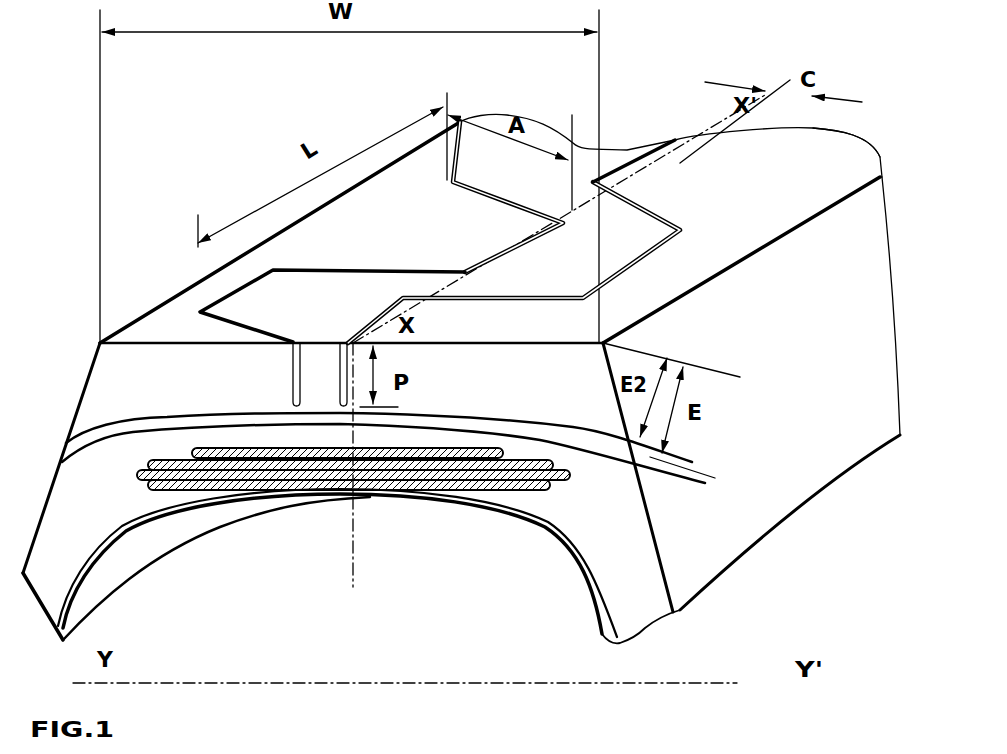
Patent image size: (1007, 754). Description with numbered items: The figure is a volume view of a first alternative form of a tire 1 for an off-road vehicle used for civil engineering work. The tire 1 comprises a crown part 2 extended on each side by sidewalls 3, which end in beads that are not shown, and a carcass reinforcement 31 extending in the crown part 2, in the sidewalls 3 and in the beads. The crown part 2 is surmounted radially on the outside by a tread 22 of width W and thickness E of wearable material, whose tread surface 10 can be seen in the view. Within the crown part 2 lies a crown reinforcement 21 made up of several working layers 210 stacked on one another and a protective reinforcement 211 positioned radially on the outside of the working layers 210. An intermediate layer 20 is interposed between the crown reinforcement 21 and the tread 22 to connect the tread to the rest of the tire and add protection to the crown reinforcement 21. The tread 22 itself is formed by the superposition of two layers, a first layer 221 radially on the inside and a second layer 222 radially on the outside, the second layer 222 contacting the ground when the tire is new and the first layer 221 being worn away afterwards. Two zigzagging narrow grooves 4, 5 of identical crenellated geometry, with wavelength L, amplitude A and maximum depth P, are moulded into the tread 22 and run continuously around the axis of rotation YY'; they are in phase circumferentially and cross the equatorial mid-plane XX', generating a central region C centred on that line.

The tire 1 is at (222, 130).
The crown part 2 is at (80, 503).
The sidewalls 3 is at (48, 590).
The zigzagging narrow groove 4 is at (237, 286).
The zigzagging narrow groove 5 is at (675, 216).
The tread surface 10 is at (403, 227).
The intermediate layer 20 is at (200, 437).
The crown reinforcement 21 is at (570, 480).
The tread 22 is at (123, 368).
The carcass reinforcement 31 is at (100, 547).
The working layers 210 is at (533, 483).
The protective reinforcement 211 is at (419, 450).
The first layer 221 is at (90, 442).
The second layer 222 is at (103, 385).